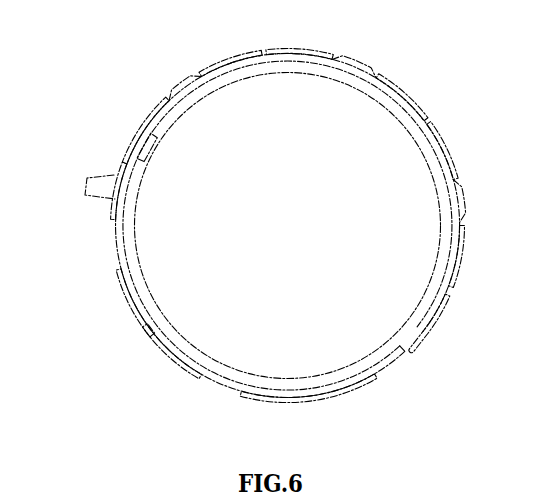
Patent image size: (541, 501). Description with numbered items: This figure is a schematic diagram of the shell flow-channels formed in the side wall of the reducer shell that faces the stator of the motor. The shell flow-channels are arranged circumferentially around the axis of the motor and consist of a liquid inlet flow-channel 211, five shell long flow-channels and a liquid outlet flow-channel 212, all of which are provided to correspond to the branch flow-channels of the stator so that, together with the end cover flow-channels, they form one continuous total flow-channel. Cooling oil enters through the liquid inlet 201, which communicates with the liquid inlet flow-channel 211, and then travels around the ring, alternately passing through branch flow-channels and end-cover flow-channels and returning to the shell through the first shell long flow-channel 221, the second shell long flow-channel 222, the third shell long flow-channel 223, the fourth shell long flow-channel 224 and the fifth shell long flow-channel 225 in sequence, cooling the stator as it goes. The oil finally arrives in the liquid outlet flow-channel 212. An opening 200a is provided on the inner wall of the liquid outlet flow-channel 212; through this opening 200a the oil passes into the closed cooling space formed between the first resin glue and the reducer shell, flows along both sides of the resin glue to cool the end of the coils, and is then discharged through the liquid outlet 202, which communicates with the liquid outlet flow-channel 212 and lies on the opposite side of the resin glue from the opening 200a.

The opening 200a is at (418, 318).
The liquid inlet 201 is at (87, 185).
The liquid outlet 202 is at (138, 152).
The liquid inlet flow-channel 211 is at (110, 222).
The liquid outlet flow-channel 212 is at (446, 307).
The first shell long flow-channel 221 is at (128, 305).
The second shell long flow-channel 222 is at (272, 400).
The third shell long flow-channel 223 is at (154, 107).
The fourth shell long flow-channel 224 is at (303, 50).
The fifth shell long flow-channel 225 is at (448, 150).